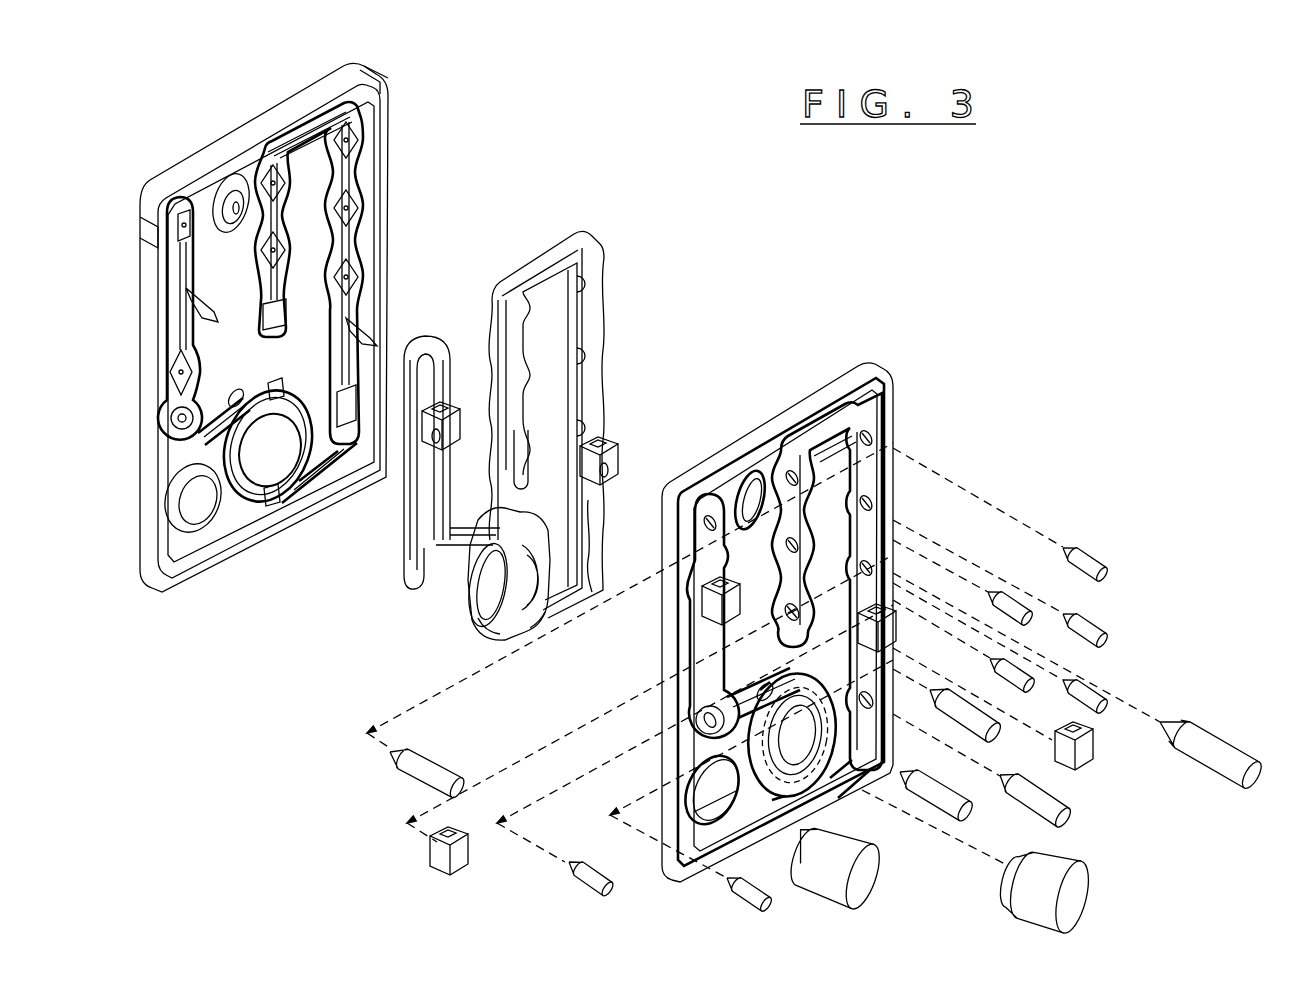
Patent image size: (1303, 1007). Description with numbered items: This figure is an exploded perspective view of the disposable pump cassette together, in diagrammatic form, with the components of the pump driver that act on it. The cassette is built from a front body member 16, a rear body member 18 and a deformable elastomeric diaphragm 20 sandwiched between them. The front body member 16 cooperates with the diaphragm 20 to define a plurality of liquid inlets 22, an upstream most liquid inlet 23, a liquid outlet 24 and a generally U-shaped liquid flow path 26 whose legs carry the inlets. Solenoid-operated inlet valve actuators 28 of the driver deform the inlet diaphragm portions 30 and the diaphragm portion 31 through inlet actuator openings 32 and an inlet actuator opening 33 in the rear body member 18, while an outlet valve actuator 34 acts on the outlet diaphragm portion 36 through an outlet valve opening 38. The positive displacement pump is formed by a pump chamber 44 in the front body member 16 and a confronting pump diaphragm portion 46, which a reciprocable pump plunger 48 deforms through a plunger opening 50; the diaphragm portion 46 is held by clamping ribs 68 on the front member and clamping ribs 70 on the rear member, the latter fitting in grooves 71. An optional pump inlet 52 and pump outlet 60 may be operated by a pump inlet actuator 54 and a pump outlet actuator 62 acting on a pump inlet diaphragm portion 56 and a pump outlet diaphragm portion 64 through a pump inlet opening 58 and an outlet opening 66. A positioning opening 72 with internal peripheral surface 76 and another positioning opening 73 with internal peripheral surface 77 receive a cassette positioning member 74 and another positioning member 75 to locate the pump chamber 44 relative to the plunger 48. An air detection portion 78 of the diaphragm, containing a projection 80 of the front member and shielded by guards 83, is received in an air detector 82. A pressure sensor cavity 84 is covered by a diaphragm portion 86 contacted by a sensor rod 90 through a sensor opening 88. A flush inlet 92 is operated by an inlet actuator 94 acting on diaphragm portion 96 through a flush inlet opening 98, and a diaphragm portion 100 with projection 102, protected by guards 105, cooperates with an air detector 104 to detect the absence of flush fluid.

The front body member 16 is at (255, 118).
The rear body member 18 is at (882, 358).
The deformable elastomeric diaphragm 20 is at (589, 232).
The liquid inlets 22 is at (347, 134).
The upstream most liquid inlet 23 is at (284, 318).
The liquid outlet 24 is at (176, 383).
The liquid flow path 26 is at (304, 146).
The inlet valve actuators 28 is at (1100, 573).
The inlet diaphragm portions 30 is at (526, 322).
The diaphragm portion 31 is at (525, 464).
The inlet actuator openings 32 is at (840, 456).
The inlet actuator opening 33 is at (818, 612).
The outlet valve actuator 34 is at (590, 875).
The outlet diaphragm portion 36 is at (443, 510).
The outlet valve opening 38 is at (735, 665).
The pump chamber 44 is at (258, 455).
The pump diaphragm portion 46 is at (503, 593).
The pump plunger 48 is at (1072, 870).
The plunger opening 50 is at (774, 722).
The pump inlet 52 is at (328, 408).
The pump inlet actuator 54 is at (1060, 800).
The pump inlet diaphragm portion 56 is at (588, 543).
The pump inlet opening 58 is at (880, 712).
The pump outlet 60 is at (226, 378).
The pump outlet actuator 62 is at (955, 800).
The pump outlet diaphragm portion 64 is at (480, 548).
The outlet opening 66 is at (790, 670).
The clamping ribs 68 is at (286, 370).
The clamping ribs 70 is at (790, 824).
The grooves 71 is at (478, 622).
The positioning opening 72 is at (714, 804).
The positioning opening 73 is at (752, 483).
The cassette positioning member 74 is at (862, 843).
The positioning member 75 is at (1207, 740).
The internal peripheral surface 76 is at (173, 532).
The internal peripheral surface 77 is at (232, 236).
The air detection portion 78 is at (620, 477).
The projection 80 is at (375, 330).
The air detector 82 is at (1093, 755).
The guards 83 is at (882, 645).
The pressure sensor cavity 84 is at (182, 440).
The diaphragm portion 86 is at (405, 568).
The sensor opening 88 is at (746, 688).
The sensor rod 90 is at (748, 900).
The flush inlet 92 is at (186, 250).
The inlet actuator 94 is at (440, 765).
The diaphragm portion 96 is at (440, 362).
The flush inlet opening 98 is at (698, 522).
The diaphragm portion 100 is at (441, 416).
The projection 102 is at (217, 316).
The air detector 104 is at (470, 850).
The guards 105 is at (738, 630).